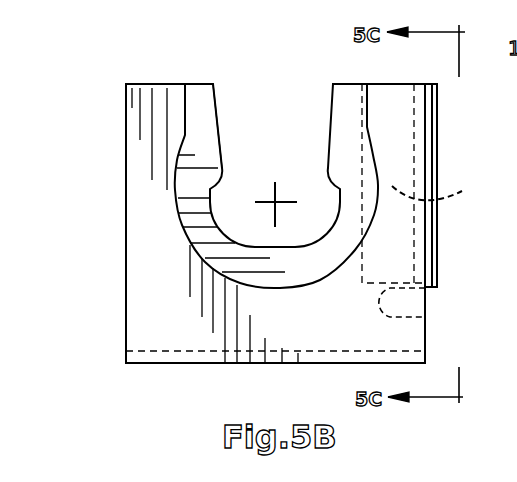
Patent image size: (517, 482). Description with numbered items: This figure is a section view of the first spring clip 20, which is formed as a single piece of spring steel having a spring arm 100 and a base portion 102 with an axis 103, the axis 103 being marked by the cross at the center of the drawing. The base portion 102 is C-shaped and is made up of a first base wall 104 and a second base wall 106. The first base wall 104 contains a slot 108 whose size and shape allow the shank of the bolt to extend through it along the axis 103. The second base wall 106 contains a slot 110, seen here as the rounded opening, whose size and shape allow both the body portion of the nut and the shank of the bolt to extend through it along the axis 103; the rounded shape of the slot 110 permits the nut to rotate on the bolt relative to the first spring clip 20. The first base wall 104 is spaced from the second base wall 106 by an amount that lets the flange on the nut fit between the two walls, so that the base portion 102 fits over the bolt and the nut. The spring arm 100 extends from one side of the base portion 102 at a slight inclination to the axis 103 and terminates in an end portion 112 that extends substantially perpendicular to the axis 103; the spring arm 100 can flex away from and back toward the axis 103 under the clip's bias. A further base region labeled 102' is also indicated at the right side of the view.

The first spring clip 20 is at (98, 233).
The spring arm 100 is at (437, 147).
The base portion 102 is at (107, 139).
The second leg portion 102' is at (448, 287).
The axis 103 is at (285, 194).
The first base wall 104 is at (205, 179).
The second base wall 106 is at (148, 318).
The slot 108 is at (225, 140).
The slot 110 is at (185, 112).
The end portion 112 is at (462, 191).